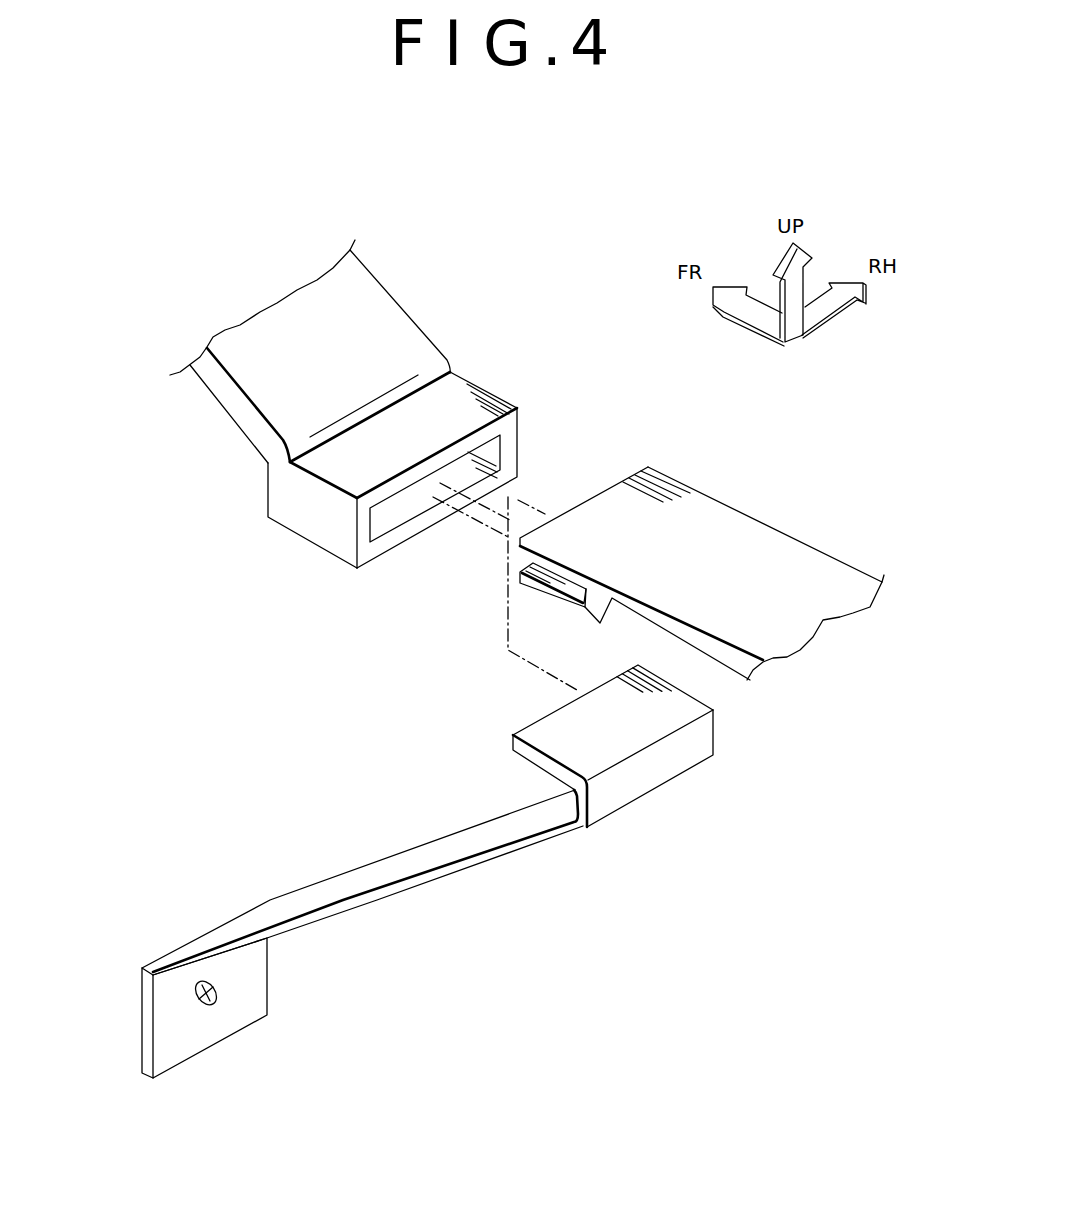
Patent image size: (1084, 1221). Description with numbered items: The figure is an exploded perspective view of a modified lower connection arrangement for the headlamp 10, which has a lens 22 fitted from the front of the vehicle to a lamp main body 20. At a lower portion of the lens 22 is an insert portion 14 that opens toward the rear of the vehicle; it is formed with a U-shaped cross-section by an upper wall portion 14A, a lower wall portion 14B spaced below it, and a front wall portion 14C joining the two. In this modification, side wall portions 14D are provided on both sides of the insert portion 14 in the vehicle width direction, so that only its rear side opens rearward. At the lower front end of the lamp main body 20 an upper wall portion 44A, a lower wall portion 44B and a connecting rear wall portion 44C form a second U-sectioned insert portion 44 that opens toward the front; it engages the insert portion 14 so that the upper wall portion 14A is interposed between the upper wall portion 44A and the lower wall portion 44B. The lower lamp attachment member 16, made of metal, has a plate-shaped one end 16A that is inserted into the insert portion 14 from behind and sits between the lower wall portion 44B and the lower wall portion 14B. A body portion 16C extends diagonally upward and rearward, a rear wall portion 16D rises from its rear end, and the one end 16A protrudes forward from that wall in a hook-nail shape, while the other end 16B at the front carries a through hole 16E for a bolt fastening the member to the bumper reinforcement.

The headlamp 10 is at (243, 473).
The insert portion 14 is at (381, 446).
The upper wall portion 14A is at (440, 422).
The lower wall portion 14B is at (430, 530).
The front wall portion 14C is at (267, 507).
The side wall portions 14D is at (518, 447).
The lower lamp attachment member 16 is at (440, 881).
The one end 16A is at (533, 722).
The other end 16B is at (268, 982).
The body portion 16C is at (445, 838).
The rear wall portion 16D is at (642, 768).
The through hole 16E is at (217, 995).
The lamp main body 20 is at (818, 548).
The lens 22 is at (397, 327).
The insert portion 44 is at (659, 566).
The upper wall portion 44A is at (612, 517).
The lower wall portion 44B is at (533, 597).
The rear wall portion 44C is at (612, 600).